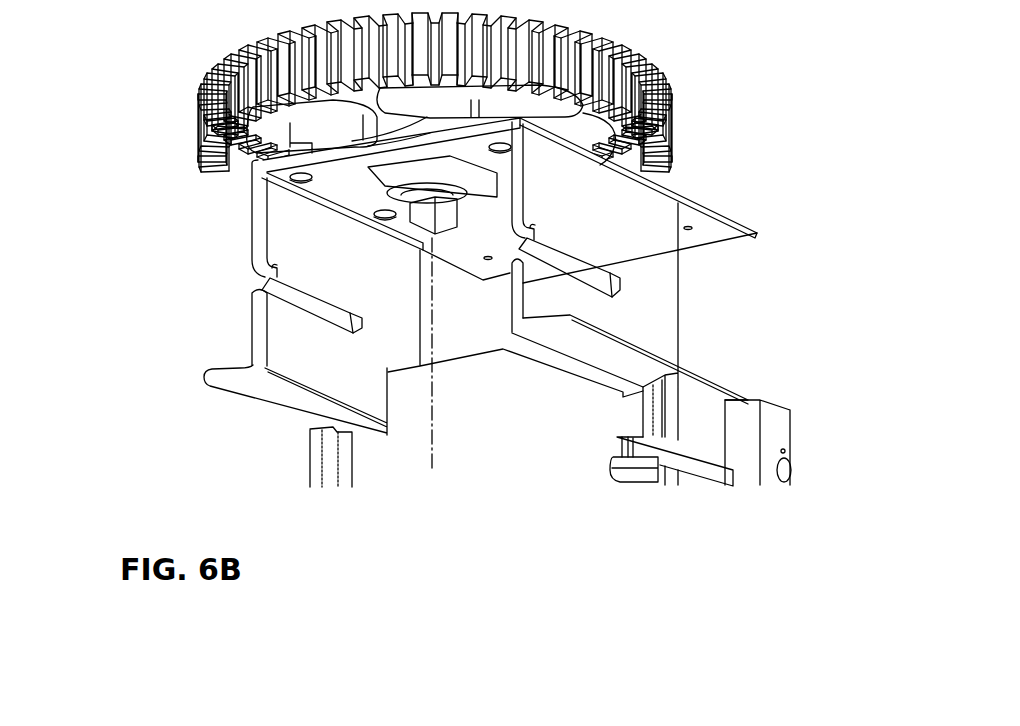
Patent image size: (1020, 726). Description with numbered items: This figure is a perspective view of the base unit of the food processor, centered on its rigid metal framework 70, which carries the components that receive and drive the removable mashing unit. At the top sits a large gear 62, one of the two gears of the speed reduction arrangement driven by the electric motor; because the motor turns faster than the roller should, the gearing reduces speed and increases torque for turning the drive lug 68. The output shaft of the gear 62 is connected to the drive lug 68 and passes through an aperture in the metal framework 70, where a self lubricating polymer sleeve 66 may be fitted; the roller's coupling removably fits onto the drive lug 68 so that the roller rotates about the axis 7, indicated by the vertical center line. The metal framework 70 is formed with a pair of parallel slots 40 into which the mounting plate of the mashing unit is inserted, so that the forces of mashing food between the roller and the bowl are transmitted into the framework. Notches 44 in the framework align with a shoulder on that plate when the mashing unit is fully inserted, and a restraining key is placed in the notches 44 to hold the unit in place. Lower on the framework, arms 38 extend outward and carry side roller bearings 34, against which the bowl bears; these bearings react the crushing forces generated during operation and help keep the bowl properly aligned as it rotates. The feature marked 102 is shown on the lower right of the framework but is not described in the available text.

The gear 62 is at (195, 86).
The self lubricating polymer sleeve 66 is at (430, 126).
The drive lug 68 is at (415, 207).
The notches 44 is at (262, 288).
The parallel slots 40 is at (315, 311).
The metal framework 70 is at (335, 373).
The axis 7 is at (440, 415).
The side roller bearings 34 is at (617, 463).
The arms 38 is at (693, 471).
The aperture 102 is at (788, 467).